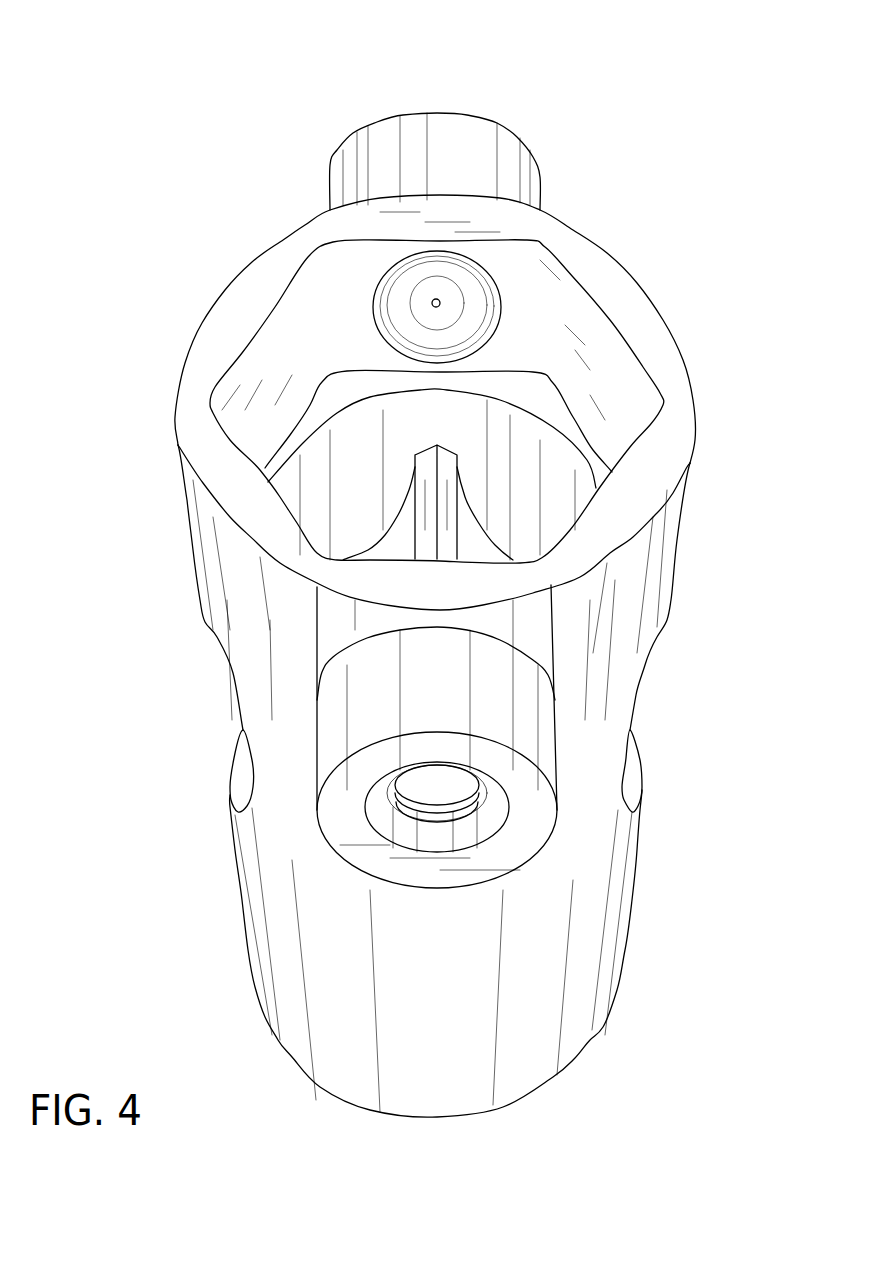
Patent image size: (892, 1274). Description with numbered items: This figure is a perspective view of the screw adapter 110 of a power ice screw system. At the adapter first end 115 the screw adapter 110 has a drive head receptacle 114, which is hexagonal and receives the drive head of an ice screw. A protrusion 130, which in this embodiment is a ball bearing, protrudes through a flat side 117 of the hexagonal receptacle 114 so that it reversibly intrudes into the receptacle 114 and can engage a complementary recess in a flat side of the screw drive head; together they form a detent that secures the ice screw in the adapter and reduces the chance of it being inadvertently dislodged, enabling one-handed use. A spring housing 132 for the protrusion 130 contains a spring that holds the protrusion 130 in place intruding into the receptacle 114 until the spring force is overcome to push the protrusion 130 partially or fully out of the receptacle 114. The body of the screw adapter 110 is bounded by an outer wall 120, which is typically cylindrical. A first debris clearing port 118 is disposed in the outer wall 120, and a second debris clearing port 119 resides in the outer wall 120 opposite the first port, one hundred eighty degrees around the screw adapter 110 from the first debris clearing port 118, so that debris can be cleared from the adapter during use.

The screw adapter 110 is at (130, 70).
The drive head receptacle 114 is at (296, 328).
The adapter first end 115 is at (685, 463).
The flat side of the hexagonal receptacle 117 is at (353, 263).
The first debris clearing port 118 is at (221, 700).
The second debris clearing port 119 is at (649, 700).
The outer wall 120 is at (466, 990).
The protrusion 130 is at (485, 280).
The spring housing 132 is at (520, 137).